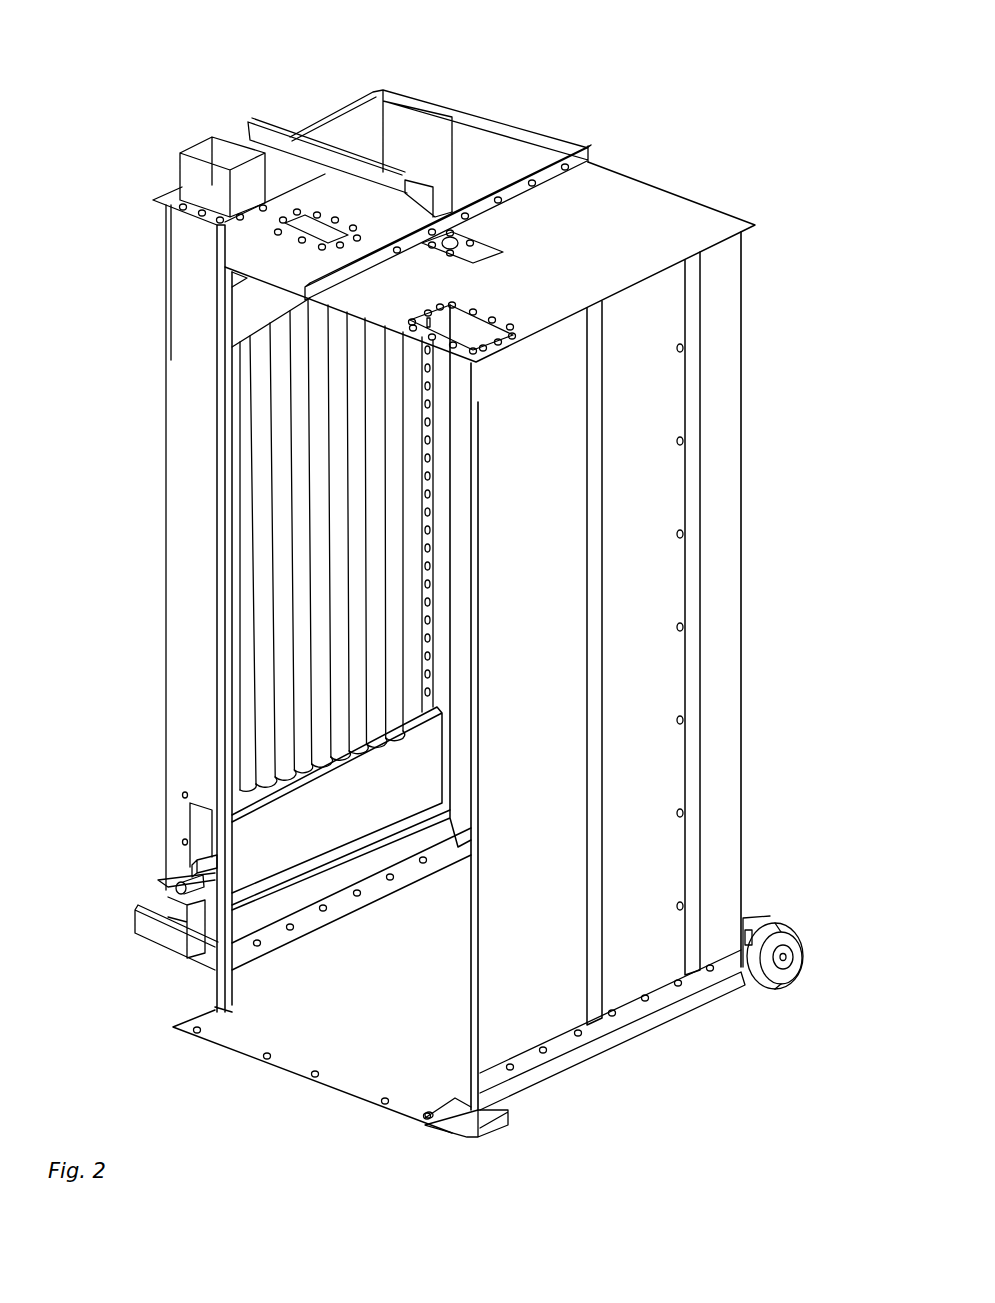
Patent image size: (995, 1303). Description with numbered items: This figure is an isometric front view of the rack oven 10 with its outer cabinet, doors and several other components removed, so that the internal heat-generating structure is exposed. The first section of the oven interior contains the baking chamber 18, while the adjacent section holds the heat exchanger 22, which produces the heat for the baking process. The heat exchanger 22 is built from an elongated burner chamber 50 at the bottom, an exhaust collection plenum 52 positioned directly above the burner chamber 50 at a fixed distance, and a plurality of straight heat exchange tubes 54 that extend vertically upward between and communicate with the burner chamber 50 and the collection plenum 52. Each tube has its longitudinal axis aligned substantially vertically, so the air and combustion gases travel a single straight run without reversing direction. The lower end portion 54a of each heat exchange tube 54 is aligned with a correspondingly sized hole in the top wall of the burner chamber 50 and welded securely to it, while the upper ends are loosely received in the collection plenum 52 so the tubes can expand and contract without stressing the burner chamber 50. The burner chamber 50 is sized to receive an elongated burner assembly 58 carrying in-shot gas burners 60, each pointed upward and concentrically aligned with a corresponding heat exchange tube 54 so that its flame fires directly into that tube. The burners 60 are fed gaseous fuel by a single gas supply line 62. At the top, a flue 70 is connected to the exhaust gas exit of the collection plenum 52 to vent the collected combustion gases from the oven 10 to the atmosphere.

The rack oven 10 is at (745, 135).
The flue 70 is at (192, 173).
The exhaust collection plenum 52 is at (278, 316).
The heat exchange tubes 54 is at (260, 417).
The heat exchanger 22 is at (260, 547).
The lower end portion 54a is at (260, 772).
The in-shot gas burners 60 is at (212, 820).
The burner assembly 58 is at (203, 857).
The gas supply line 62 is at (200, 880).
The burner chamber 50 is at (365, 812).
The baking chamber 18 is at (326, 1008).